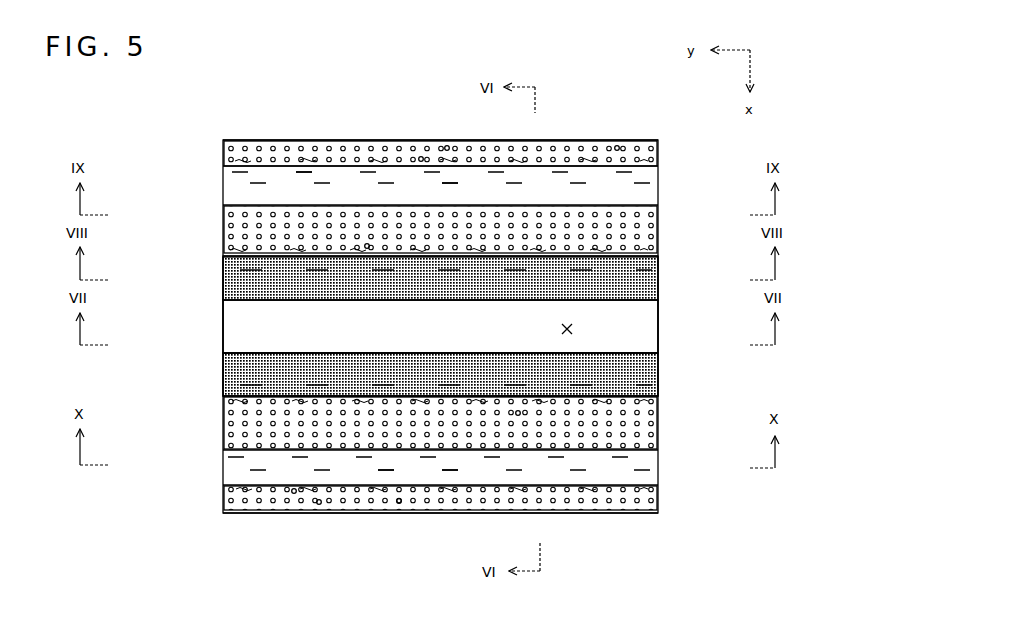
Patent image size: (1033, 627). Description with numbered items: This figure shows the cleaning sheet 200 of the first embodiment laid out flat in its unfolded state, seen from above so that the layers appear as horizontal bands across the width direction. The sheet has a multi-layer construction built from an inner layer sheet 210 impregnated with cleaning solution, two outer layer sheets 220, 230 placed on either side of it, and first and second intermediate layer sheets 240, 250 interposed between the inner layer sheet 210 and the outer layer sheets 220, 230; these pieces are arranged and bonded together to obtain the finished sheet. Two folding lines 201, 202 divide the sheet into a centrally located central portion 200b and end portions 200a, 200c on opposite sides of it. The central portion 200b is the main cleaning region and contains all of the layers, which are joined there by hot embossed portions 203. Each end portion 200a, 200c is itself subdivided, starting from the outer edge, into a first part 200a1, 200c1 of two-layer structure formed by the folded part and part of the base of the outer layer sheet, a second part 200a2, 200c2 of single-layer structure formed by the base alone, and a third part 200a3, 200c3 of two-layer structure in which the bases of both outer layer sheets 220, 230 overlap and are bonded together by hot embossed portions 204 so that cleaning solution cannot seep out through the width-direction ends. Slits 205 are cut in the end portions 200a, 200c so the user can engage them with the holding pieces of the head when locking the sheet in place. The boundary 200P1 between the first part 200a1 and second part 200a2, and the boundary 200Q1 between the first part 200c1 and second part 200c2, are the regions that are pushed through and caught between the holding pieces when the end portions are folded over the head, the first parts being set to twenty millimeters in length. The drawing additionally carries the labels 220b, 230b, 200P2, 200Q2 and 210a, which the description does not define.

The cleaning sheet 200 is at (369, 101).
The outer layer sheet 220 is at (430, 170).
The outer surface of first substrate 220b is at (293, 140).
The outer layer sheet 230 is at (429, 490).
The outer surface of second substrate 230b is at (345, 514).
The end portion 200a is at (430, 197).
The first part 200a1 is at (665, 141).
The second part 200a2 is at (673, 168).
The third part 200a3 is at (673, 207).
The central portion 200b is at (185, 398).
The end portion 200c is at (429, 455).
The first part 200c1 is at (673, 487).
The second part 200c2 is at (665, 485).
The third part 200c3 is at (665, 398).
The boundary 200P1 is at (363, 168).
The second flat portion 200P2 is at (447, 179).
The boundary 200Q1 is at (393, 487).
The second flat portion of second substrate 200Q2 is at (467, 448).
The folding line 201 is at (401, 302).
The folding line 202 is at (444, 392).
The hot embossed portions 203 is at (383, 383).
The hot embossed portions 204 is at (619, 144).
The slits 205 is at (447, 148).
The inner layer sheet 210 is at (416, 326).
The center of display element 210a is at (574, 330).
The intermediate layer sheet 240 is at (650, 286).
The intermediate layer sheet 250 is at (650, 371).